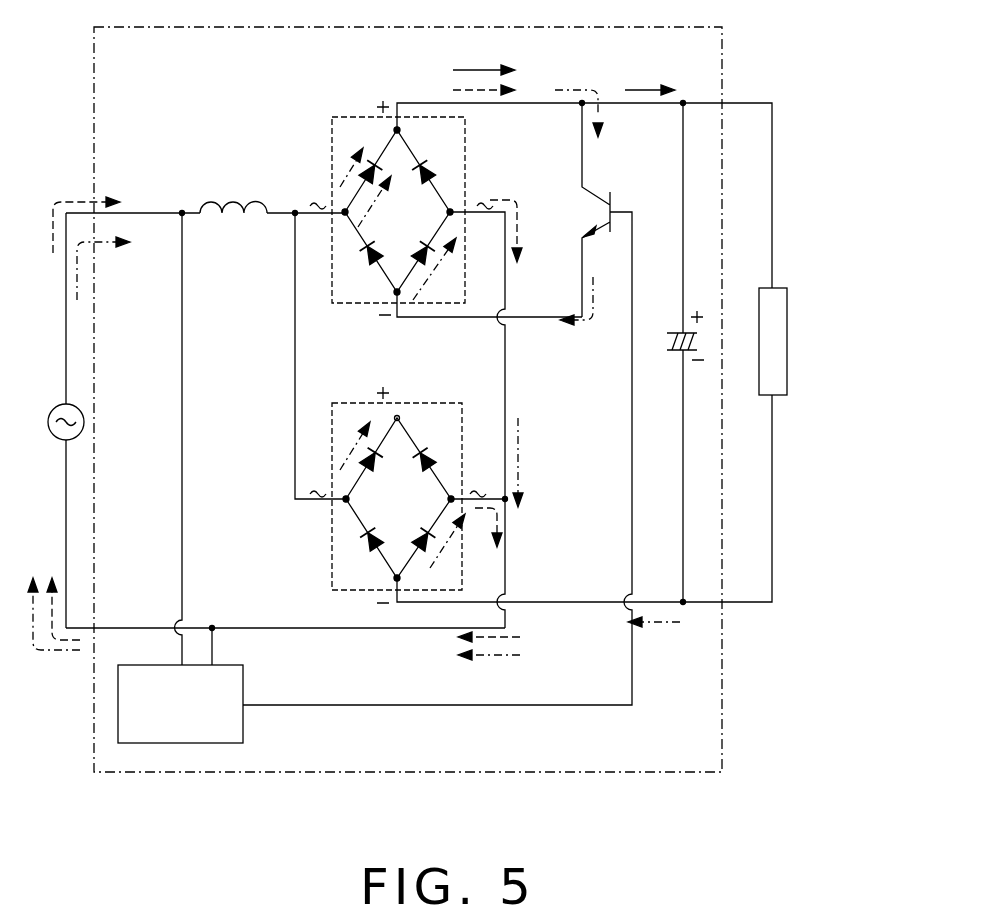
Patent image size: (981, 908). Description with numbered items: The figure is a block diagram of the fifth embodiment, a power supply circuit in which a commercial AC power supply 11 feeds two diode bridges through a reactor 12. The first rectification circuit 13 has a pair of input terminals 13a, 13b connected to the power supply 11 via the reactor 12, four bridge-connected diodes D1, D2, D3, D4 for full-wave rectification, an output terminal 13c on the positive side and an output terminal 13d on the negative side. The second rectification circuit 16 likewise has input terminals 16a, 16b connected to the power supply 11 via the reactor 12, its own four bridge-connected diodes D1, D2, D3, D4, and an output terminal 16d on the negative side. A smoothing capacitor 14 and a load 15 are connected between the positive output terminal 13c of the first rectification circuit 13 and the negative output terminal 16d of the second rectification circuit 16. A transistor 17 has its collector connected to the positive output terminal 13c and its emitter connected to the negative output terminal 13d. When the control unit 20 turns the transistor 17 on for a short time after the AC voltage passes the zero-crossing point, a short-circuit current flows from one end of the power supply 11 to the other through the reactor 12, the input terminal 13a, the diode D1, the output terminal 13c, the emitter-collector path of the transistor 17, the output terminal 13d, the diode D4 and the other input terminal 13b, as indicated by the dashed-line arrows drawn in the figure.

The commercial AC power supply 11 is at (55, 410).
The reactor 12 is at (224, 201).
The first rectification circuit 13 is at (350, 115).
The input terminal 13a is at (344, 211).
The input terminal 13b is at (452, 211).
The output terminal on the positive side 13c is at (398, 128).
The output terminal on the negative side 13d is at (396, 293).
The smoothing capacitor 14 is at (672, 332).
The load 15 is at (774, 288).
The second rectification circuit 16 is at (350, 402).
The input terminal 16a is at (345, 500).
The input terminal 16b is at (452, 498).
The output terminal on the negative side 16d is at (396, 579).
The transistor 17 is at (598, 192).
The control unit 20 is at (243, 687).
The diode D1 is at (362, 165).
The diode D2 is at (430, 165).
The diode D3 is at (368, 258).
The diode D4 is at (420, 246).